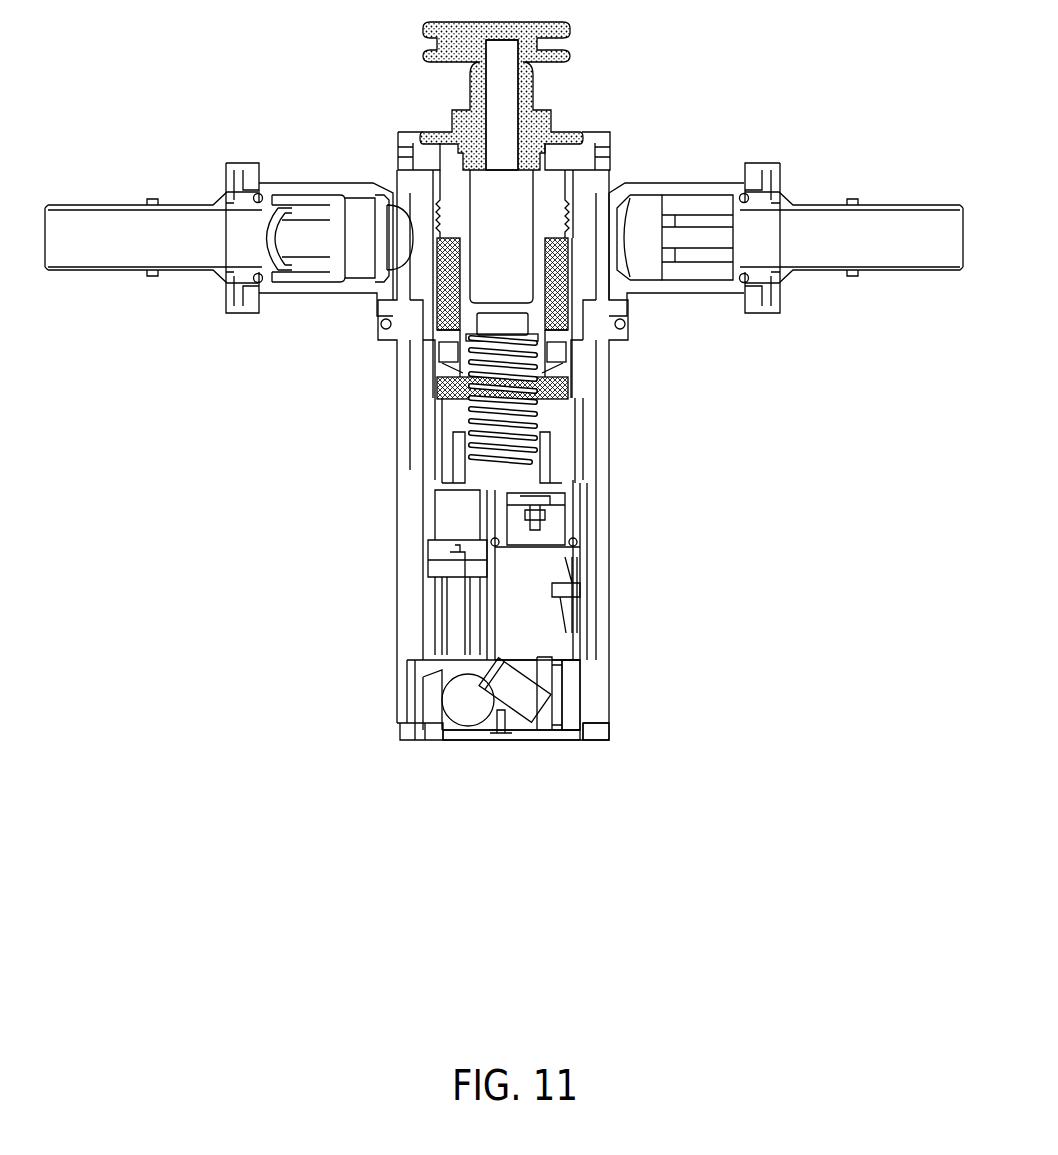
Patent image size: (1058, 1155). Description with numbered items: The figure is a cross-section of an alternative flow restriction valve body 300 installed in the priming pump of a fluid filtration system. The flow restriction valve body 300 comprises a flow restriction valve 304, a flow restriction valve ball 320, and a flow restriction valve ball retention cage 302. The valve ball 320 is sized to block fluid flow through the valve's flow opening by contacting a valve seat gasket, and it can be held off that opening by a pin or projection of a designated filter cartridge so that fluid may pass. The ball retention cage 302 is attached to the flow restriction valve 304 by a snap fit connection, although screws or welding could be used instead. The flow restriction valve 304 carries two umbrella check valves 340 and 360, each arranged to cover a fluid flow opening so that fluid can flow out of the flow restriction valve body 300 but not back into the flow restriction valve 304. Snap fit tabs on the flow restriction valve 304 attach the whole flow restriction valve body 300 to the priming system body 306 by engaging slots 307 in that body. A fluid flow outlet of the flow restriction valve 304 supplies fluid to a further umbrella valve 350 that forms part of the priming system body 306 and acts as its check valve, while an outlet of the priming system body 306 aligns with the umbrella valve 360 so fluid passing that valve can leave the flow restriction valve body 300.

The flow restriction valve body 300 is at (409, 668).
The flow restriction valve ball retention cage 302 is at (473, 740).
The flow restriction valve 304 is at (568, 705).
The priming system body 306 is at (568, 420).
The slots 307 is at (621, 712).
The flow restriction valve ball 320 is at (462, 707).
The umbrella valve 340 is at (586, 592).
The umbrella valve 350 is at (543, 487).
The umbrella valve 360 is at (445, 582).